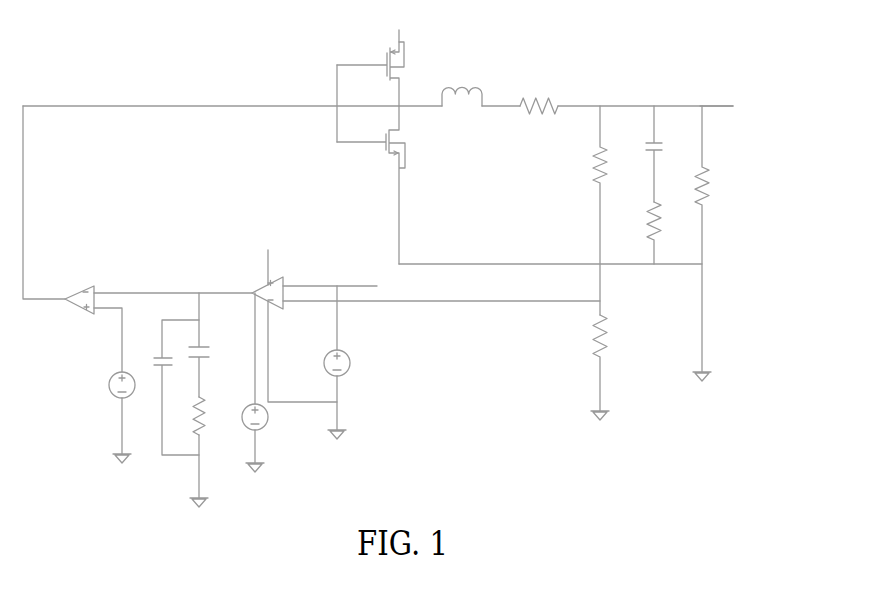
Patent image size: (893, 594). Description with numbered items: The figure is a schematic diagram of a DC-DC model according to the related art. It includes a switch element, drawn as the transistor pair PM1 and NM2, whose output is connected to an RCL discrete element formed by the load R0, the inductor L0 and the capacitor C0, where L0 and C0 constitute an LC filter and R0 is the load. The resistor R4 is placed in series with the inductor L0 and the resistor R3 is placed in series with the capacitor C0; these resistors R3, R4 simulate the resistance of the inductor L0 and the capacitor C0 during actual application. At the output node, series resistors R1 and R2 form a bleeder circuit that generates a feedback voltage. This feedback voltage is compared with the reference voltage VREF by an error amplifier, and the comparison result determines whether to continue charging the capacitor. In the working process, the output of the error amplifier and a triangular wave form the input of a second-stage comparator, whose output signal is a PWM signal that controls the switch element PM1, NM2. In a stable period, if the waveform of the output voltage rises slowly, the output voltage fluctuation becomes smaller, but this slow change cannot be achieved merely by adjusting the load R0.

The P-channel MOSFET power switch PM1 is at (383, 74).
The N-channel MOSFET power switch NM2 is at (388, 185).
The inductor L0 is at (462, 88).
The resistor R4 is at (539, 94).
The series resistor R2 is at (592, 210).
The capacitor C0 is at (644, 154).
The resistor R3 is at (646, 233).
The load R0 is at (695, 243).
The series resistor R1 is at (591, 367).
The reference voltage VREF is at (344, 285).